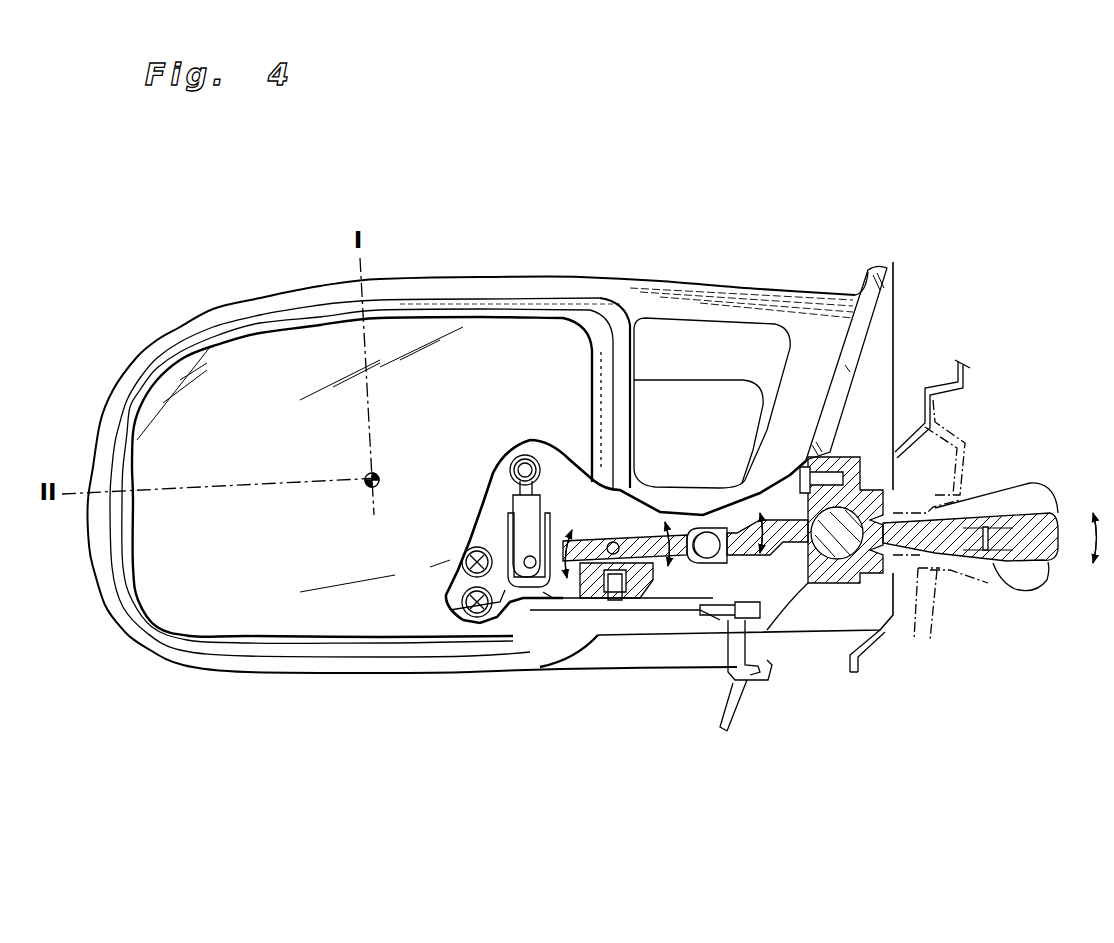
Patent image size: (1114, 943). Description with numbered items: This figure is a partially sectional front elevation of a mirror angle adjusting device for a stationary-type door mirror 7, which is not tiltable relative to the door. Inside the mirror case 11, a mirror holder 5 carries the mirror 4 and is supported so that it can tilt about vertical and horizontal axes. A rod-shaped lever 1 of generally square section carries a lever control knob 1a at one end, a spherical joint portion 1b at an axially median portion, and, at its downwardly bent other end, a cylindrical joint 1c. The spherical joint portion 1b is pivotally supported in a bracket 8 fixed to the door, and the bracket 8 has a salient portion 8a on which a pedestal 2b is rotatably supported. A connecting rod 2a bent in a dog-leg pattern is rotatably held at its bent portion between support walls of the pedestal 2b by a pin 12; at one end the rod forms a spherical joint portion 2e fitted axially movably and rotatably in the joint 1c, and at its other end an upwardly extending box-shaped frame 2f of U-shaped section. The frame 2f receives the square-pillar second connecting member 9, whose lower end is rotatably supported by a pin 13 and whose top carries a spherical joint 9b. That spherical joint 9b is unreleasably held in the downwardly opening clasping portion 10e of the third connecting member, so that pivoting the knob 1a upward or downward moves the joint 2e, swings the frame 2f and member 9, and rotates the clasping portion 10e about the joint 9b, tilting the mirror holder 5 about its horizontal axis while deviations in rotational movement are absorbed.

The lever 1 is at (993, 567).
The lever control knob 1a is at (1040, 555).
The spherical joint portion 1b is at (893, 400).
The cylindrical joint 1c is at (730, 515).
The connecting rod 2a is at (572, 537).
The pedestal 2b is at (580, 597).
The spherical joint portion 2e is at (700, 524).
The box-shaped frame 2f is at (502, 577).
The mirror 4 is at (268, 610).
The mirror holder 5 is at (210, 636).
The door mirror 7 is at (867, 230).
The bracket 8 is at (863, 668).
The salient portion 8a is at (742, 598).
The second connecting member 9 is at (546, 497).
The spherical joint 9b is at (522, 456).
The clasping portion 10e is at (550, 515).
The mirror case 11 is at (163, 647).
The pin 12 is at (615, 542).
The pin 13 is at (518, 577).